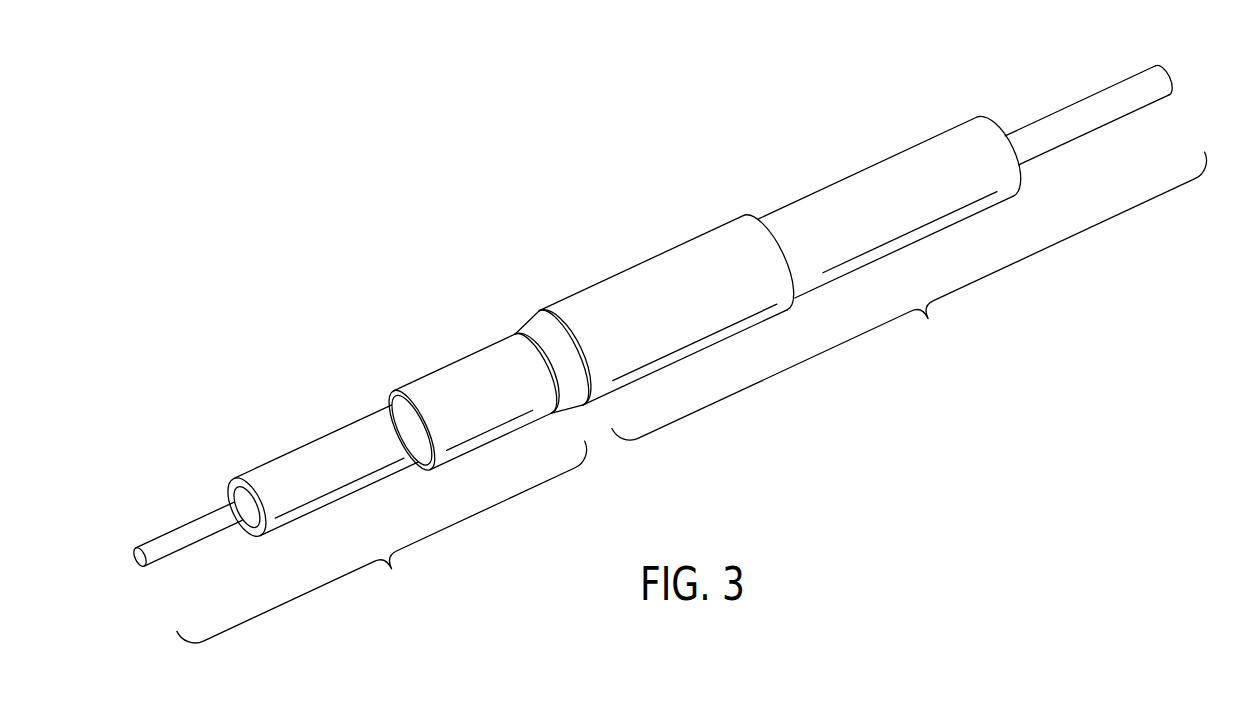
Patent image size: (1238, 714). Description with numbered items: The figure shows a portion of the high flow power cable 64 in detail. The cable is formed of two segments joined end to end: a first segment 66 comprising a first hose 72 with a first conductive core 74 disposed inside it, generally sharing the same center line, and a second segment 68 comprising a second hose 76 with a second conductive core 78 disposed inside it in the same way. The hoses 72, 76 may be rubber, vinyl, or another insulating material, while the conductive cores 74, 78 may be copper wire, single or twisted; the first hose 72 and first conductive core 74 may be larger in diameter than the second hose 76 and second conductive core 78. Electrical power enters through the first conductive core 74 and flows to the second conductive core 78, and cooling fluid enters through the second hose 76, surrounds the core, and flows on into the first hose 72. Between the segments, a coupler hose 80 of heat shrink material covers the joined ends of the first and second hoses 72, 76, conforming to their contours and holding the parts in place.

The high flow power cable 64 is at (653, 308).
The first segment 66 is at (915, 305).
The second segment 68 is at (388, 551).
The first hose 72 is at (867, 171).
The first conductive core 74 is at (1078, 102).
The second hose 76 is at (313, 442).
The second conductive core 78 is at (192, 522).
The coupler hose 80 is at (634, 264).